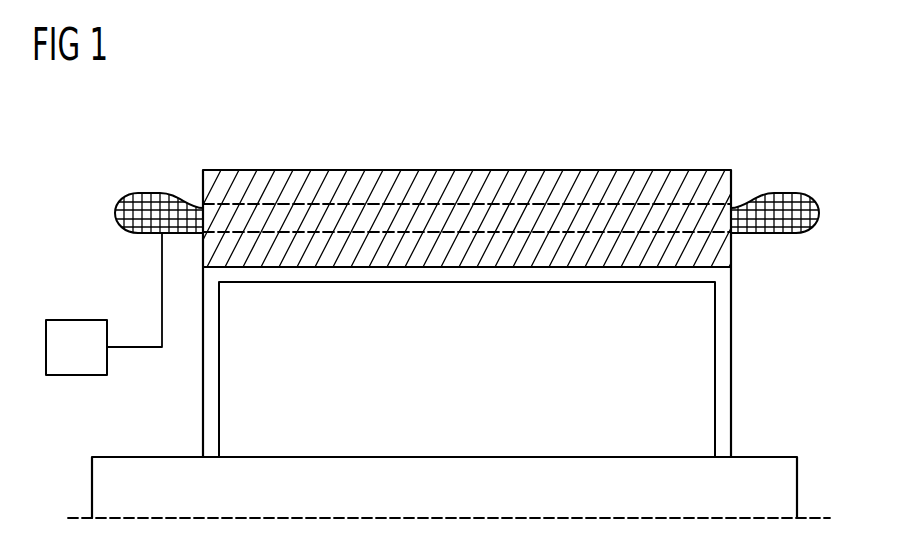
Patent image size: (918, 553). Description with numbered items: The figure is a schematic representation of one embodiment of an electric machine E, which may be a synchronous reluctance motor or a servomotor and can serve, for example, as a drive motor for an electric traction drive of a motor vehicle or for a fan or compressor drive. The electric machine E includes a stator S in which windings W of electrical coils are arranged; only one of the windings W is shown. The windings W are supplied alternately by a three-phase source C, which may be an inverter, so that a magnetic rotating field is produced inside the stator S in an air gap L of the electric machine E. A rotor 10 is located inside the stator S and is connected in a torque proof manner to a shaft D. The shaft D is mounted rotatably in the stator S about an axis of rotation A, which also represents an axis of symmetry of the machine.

The three-phase source C is at (76, 320).
The windings W is at (565, 205).
The stator S is at (612, 183).
The electric machine E is at (694, 133).
The air gap L is at (706, 275).
The rotor 10 is at (706, 321).
The shaft D is at (768, 457).
The axis of rotation A is at (817, 518).